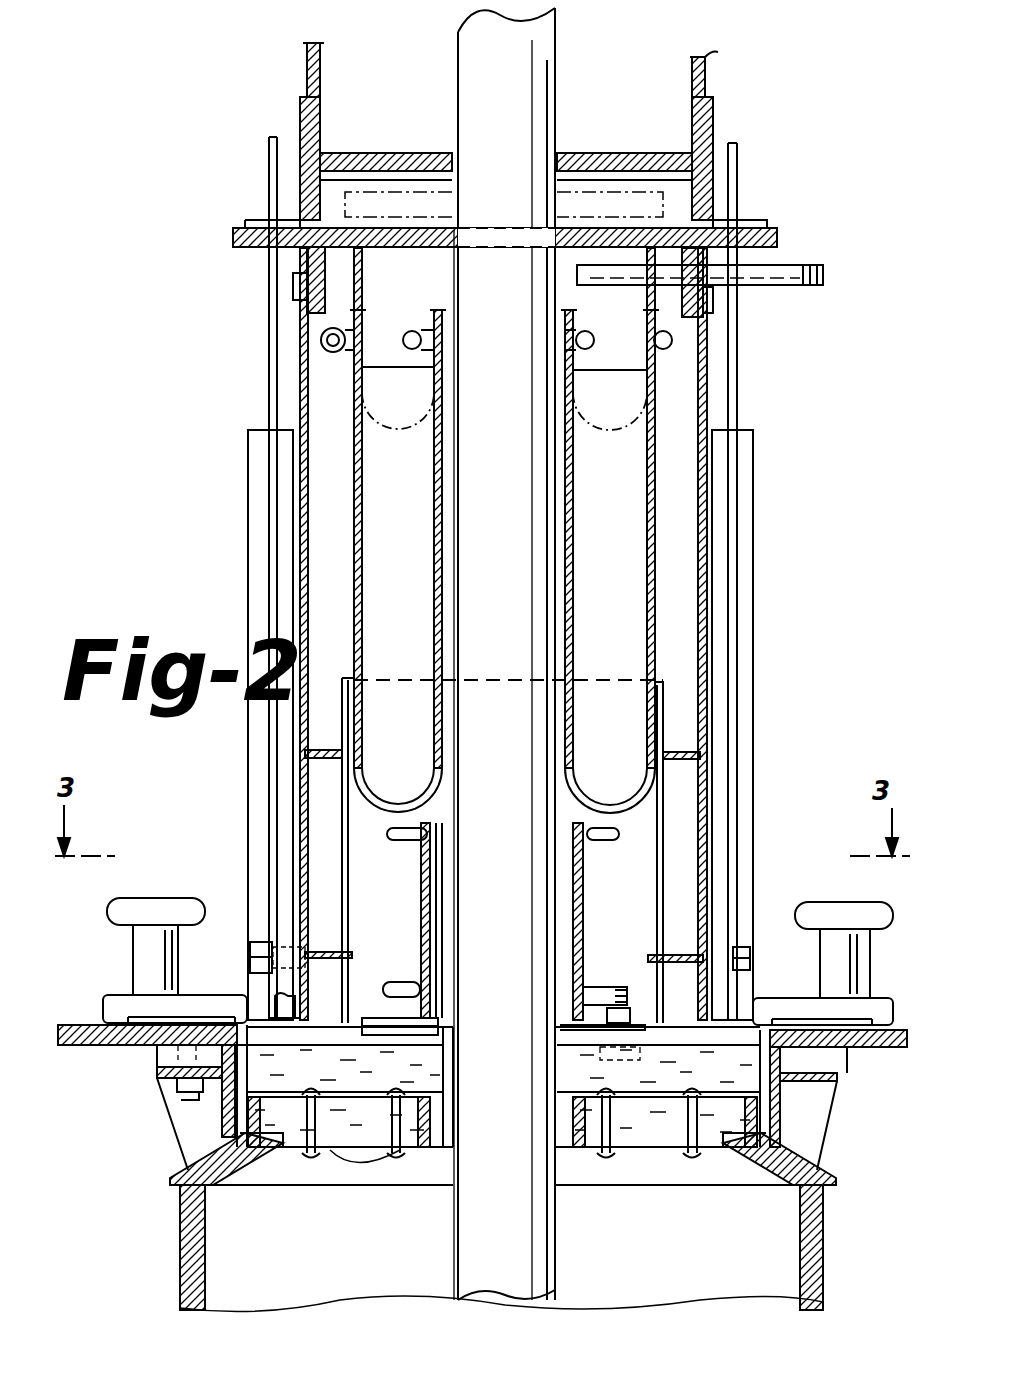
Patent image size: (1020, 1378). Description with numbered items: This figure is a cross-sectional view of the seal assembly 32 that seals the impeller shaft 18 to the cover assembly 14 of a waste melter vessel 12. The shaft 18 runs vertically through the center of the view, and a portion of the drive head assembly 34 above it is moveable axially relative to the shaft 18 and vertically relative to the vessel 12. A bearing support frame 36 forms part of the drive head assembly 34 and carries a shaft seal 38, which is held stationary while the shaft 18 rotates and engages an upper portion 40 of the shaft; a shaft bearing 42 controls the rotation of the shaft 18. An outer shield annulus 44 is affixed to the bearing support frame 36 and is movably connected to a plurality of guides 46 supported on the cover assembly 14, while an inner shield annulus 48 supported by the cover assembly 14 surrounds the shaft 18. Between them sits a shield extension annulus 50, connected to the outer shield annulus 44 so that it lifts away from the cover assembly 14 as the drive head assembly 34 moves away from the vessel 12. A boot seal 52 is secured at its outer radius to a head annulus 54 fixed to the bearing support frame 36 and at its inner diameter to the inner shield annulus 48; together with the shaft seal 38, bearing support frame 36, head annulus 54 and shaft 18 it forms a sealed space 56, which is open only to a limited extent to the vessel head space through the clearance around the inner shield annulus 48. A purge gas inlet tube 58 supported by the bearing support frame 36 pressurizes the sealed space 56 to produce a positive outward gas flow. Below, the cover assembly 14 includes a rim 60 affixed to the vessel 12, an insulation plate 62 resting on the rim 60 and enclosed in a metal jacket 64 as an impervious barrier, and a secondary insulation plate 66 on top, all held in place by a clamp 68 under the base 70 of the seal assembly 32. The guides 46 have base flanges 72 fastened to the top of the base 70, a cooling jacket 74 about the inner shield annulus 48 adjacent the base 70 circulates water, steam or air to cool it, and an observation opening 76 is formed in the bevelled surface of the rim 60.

The vessel 12 is at (822, 1235).
The cover assembly 14 is at (172, 1119).
The shaft 18 is at (545, 1240).
The seal assembly 32 is at (354, 492).
The drive head assembly 34 is at (302, 120).
The bearing support frame 36 is at (293, 237).
The shaft seal 38 is at (560, 222).
The upper portion of the shaft 40 is at (482, 88).
The shaft bearing 42 is at (353, 203).
The outer shield annulus 44 is at (707, 407).
The guides 46 is at (738, 630).
The inner shield annulus 48 is at (573, 812).
The shield extension annulus 50 is at (660, 790).
The boot seal 52 is at (650, 555).
The head annulus 54 is at (355, 315).
The sealed space 56 is at (387, 392).
The purge gas inlet tube 58 is at (770, 282).
The rim 60 is at (185, 1158).
The insulation plate 62 is at (727, 1118).
The metal jacket 64 is at (767, 1087).
The secondary insulation plate 66 is at (703, 1050).
The clamp 68 is at (838, 933).
The base 70 is at (812, 1035).
The base flanges 72 is at (277, 1013).
The cooling jacket 74 is at (430, 940).
The observation opening 76 is at (360, 1163).